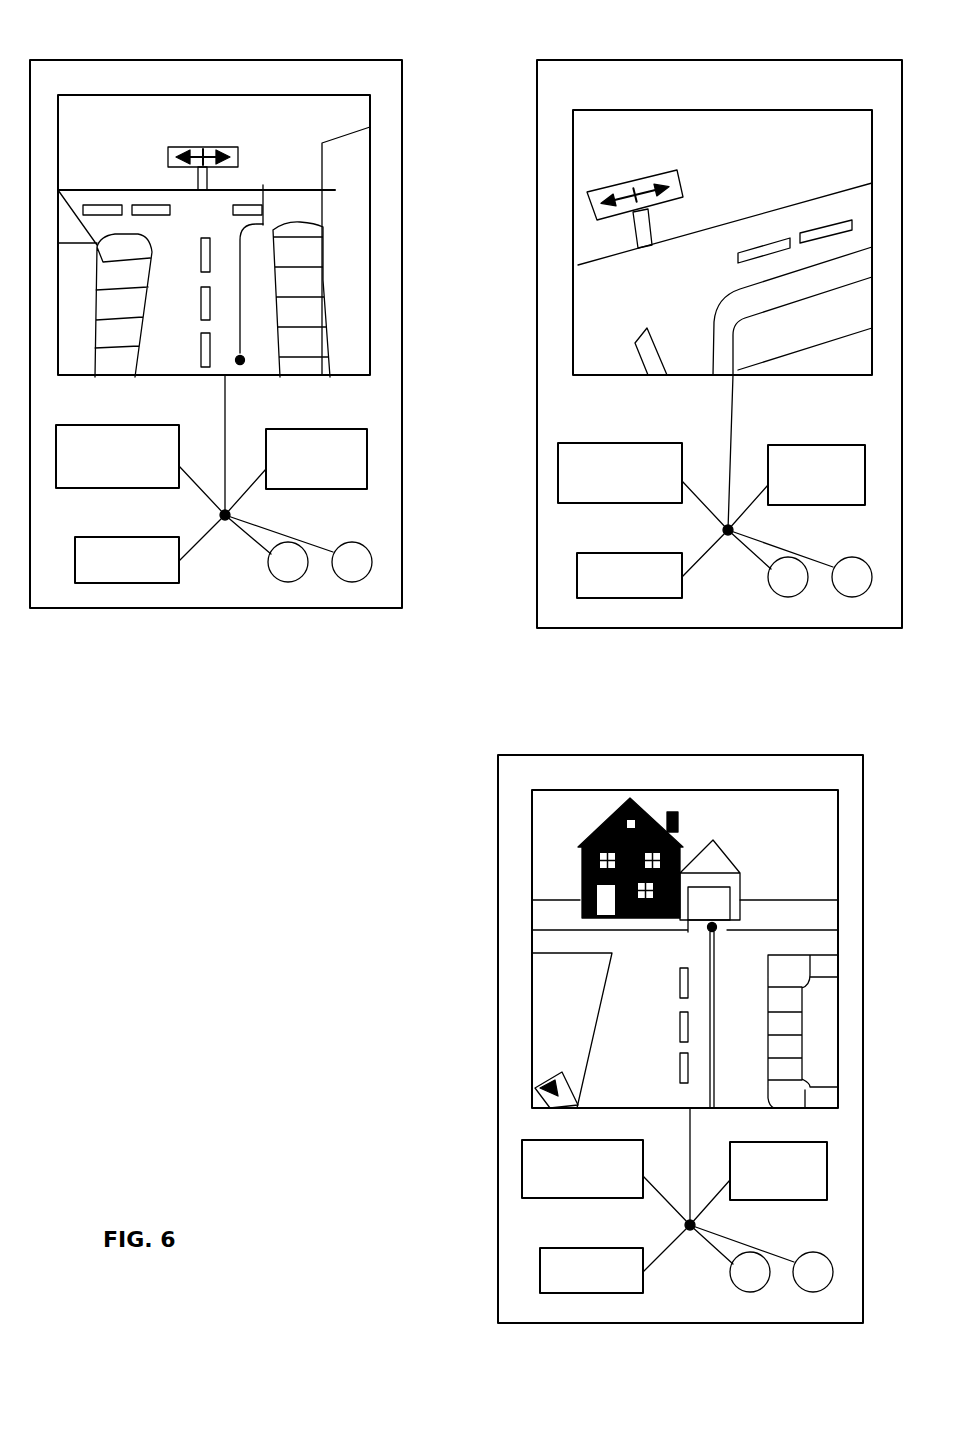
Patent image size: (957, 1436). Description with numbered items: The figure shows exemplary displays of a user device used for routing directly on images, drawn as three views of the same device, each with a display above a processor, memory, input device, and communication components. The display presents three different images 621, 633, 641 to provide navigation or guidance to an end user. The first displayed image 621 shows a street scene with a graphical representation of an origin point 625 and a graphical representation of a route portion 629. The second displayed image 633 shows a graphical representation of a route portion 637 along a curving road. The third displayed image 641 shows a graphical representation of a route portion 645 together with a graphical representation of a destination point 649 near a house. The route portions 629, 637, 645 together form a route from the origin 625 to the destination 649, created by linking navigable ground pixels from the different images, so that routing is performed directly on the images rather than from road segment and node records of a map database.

The displayed image 621 is at (135, 107).
The origin point 625 is at (243, 360).
The route portion 629 is at (238, 240).
The displayed image 633 is at (653, 127).
The route portion 637 is at (722, 303).
The displayed image 641 is at (577, 812).
The route portion 645 is at (710, 952).
The destination point 649 is at (716, 927).